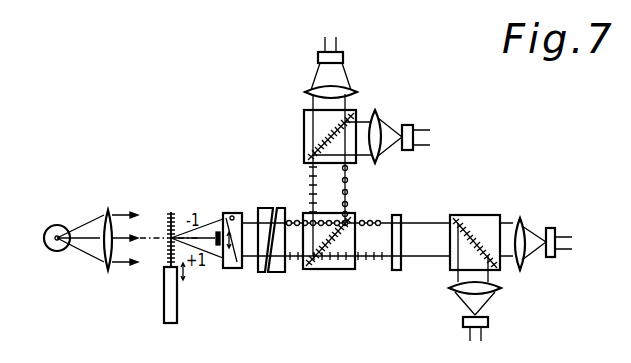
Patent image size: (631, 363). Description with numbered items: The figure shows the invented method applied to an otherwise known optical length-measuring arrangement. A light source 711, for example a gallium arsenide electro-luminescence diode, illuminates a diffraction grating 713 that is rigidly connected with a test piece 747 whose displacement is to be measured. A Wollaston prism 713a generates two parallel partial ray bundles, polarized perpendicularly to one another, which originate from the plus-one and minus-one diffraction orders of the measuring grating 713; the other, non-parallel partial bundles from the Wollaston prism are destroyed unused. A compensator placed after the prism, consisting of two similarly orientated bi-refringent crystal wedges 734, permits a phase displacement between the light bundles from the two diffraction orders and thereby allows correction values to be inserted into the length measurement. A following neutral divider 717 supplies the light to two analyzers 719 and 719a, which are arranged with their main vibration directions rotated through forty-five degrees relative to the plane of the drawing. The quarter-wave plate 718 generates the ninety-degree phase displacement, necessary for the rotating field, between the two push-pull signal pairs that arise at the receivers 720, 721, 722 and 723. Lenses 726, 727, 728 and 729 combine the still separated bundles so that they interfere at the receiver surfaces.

The light source 711 is at (55, 226).
The diffraction grating 713 is at (170, 222).
The Wollaston prism 713a is at (231, 214).
The test piece 747 is at (165, 296).
The bi-refringent crystal wedges 734 is at (278, 275).
The neutral divider 717 is at (338, 269).
The λ/4 plate 718 is at (397, 271).
The analyzer 719 is at (470, 216).
The analyzer 719a is at (304, 128).
The lens 727 is at (530, 203).
The receiver 721 is at (548, 230).
The lens 726 is at (497, 290).
The receiver 720 is at (490, 325).
The lens 729 is at (306, 92).
The receiver 722 is at (318, 58).
The lens 728 is at (380, 124).
The receiver 723 is at (413, 130).